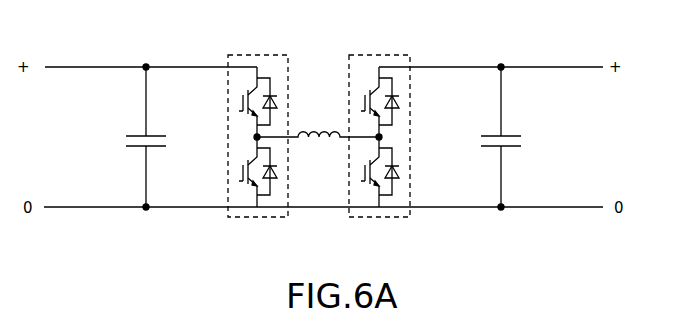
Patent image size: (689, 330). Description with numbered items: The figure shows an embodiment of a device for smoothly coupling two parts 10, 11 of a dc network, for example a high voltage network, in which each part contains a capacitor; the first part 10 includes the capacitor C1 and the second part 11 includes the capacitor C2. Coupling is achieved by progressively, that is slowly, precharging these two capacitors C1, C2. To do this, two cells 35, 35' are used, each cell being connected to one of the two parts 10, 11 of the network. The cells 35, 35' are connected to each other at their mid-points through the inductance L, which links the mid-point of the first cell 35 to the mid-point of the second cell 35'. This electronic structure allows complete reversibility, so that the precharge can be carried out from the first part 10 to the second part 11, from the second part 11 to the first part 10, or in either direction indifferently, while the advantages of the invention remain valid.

The first part of the dc network 10 is at (96, 174).
The second part of the dc network 11 is at (553, 172).
The cell 35 is at (258, 113).
The cell 35' is at (379, 113).
The capacitor C1 is at (136, 137).
The capacitor C2 is at (507, 137).
The inductance L is at (318, 147).